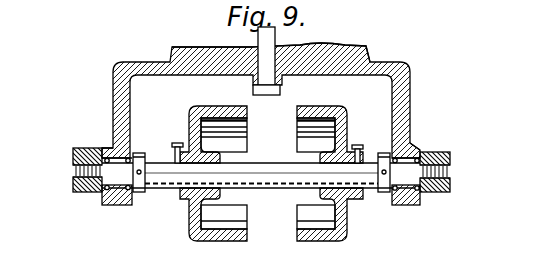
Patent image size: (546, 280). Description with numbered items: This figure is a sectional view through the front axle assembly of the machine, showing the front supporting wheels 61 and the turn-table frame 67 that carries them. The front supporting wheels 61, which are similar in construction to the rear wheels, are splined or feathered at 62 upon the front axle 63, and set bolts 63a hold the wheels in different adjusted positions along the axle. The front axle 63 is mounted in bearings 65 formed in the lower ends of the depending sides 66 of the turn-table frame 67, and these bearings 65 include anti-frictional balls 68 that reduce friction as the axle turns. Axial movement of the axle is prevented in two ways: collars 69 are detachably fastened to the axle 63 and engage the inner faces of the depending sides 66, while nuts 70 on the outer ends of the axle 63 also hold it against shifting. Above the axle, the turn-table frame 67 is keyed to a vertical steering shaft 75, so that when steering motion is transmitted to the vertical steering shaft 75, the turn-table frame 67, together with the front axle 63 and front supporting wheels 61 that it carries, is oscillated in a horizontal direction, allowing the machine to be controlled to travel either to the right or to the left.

The front supporting wheels 61 is at (200, 241).
The spline 62 is at (275, 188).
The front axle 63 is at (265, 167).
The set bolts 63a is at (364, 132).
The bearings 65 is at (105, 150).
The depending sides 66 is at (120, 118).
The turn-table frame 67 is at (364, 55).
The anti-frictional balls 68 is at (107, 206).
The collars 69 is at (140, 193).
The nuts 70 is at (73, 162).
The vertical steering shaft 75 is at (258, 40).